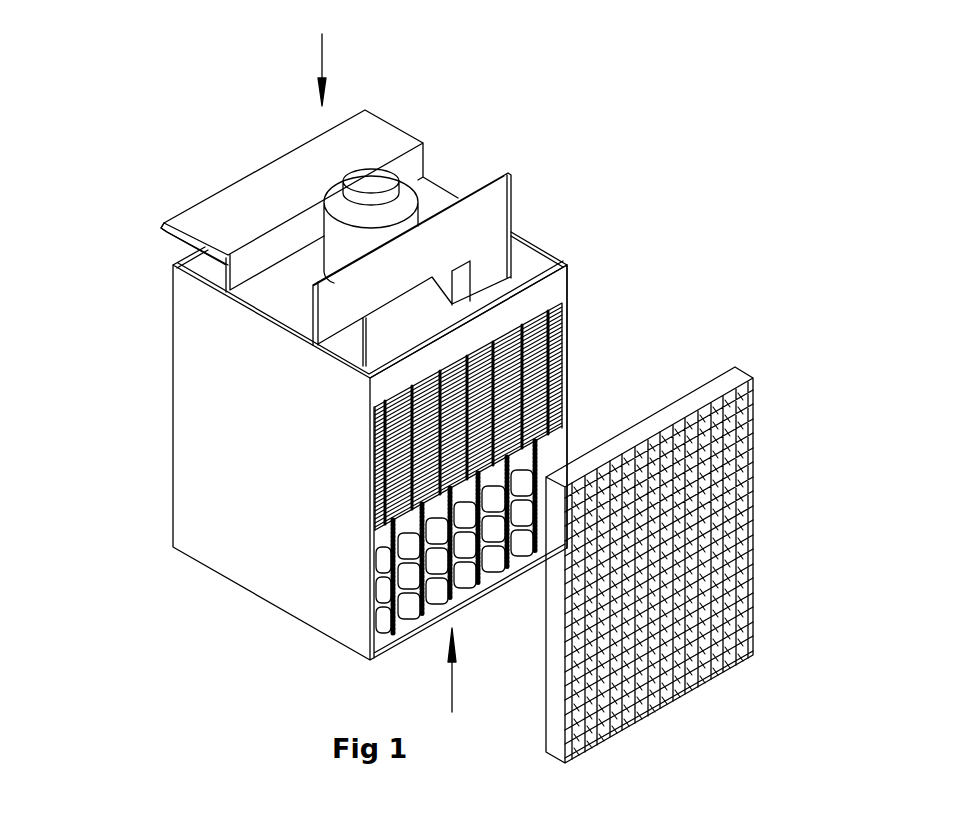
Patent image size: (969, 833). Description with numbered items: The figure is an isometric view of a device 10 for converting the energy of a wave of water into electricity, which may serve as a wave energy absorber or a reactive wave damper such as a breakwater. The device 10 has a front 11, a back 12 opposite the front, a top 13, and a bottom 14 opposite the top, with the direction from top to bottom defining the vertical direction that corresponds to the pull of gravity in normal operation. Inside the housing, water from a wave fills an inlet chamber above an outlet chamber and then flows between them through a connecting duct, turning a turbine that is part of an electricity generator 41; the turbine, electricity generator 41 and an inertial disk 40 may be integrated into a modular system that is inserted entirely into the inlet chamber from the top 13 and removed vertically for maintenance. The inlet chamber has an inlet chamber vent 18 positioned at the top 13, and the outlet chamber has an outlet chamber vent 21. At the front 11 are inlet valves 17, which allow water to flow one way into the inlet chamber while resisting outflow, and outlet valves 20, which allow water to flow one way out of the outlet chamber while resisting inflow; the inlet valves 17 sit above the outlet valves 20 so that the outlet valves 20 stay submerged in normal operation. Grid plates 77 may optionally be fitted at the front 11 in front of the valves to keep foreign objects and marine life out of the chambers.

The device 10 is at (437, 100).
The front 11 is at (806, 480).
The back 12 is at (150, 314).
The top 13 is at (310, 59).
The bottom 14 is at (468, 683).
The inlet valves 17 is at (578, 340).
The inlet chamber vent 18 is at (437, 313).
The outlet valves 20 is at (558, 440).
The outlet chamber vent 21 is at (205, 268).
The inertial disk 40 is at (378, 180).
The electricity generator 41 is at (343, 243).
The grid plates 77 is at (742, 573).